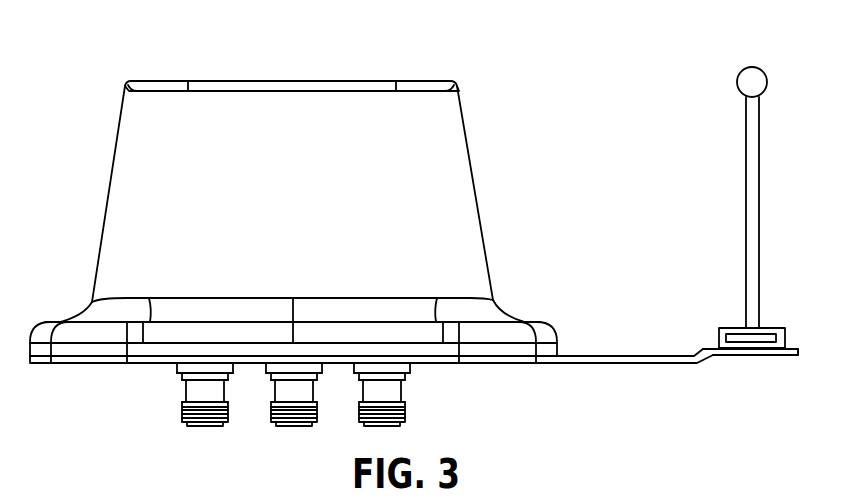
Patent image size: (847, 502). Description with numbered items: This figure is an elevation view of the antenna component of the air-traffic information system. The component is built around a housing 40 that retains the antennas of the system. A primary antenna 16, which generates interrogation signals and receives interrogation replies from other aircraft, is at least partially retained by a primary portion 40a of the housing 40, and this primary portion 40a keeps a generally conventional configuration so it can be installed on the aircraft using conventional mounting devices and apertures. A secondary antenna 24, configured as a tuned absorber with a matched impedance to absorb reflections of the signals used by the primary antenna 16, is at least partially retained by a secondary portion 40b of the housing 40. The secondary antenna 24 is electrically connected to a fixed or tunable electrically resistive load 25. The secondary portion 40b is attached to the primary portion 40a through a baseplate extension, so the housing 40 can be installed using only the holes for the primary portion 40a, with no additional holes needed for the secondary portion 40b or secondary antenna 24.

The primary antenna 16 is at (298, 189).
The secondary antenna 24 is at (724, 126).
The electrically resistive load 25 is at (734, 336).
The housing 40 is at (420, 343).
The primary portion of housing 40a is at (317, 117).
The secondary portion of housing 40b is at (790, 333).